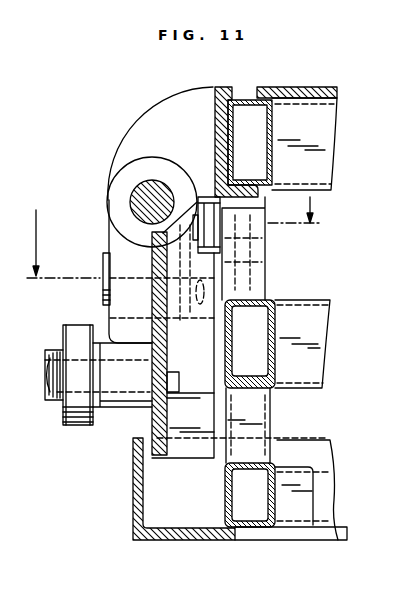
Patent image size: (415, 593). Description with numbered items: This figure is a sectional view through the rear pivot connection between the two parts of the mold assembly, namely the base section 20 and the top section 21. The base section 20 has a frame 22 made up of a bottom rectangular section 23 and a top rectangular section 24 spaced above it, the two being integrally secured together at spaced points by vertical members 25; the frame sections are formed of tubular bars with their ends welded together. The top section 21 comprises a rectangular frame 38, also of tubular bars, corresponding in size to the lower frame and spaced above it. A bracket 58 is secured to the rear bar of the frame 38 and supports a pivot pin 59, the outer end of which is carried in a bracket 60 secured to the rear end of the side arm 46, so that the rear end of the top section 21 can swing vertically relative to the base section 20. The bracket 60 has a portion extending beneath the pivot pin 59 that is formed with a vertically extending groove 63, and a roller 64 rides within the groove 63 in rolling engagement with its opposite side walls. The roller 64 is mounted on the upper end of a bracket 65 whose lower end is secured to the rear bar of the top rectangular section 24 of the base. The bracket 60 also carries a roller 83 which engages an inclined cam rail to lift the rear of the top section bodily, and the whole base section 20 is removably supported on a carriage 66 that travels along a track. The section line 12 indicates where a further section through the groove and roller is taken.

The section line 12- 12 is at (184, 237).
The base section 20 is at (286, 412).
The top section 21 is at (302, 87).
The frame 22 is at (218, 500).
The bottom rectangular section 23 is at (310, 507).
The top rectangular section 24 is at (330, 337).
The vertical members 25 is at (268, 432).
The rectangular frame 38 is at (322, 130).
The side arm 46 is at (103, 293).
The bracket 58 is at (169, 109).
The pivot pin 59 is at (137, 202).
The bracket 60 is at (167, 349).
The groove 63 is at (170, 452).
The roller 64 is at (208, 188).
The bracket 65 is at (267, 287).
The carriage 66 is at (127, 470).
The roller 83 is at (80, 413).